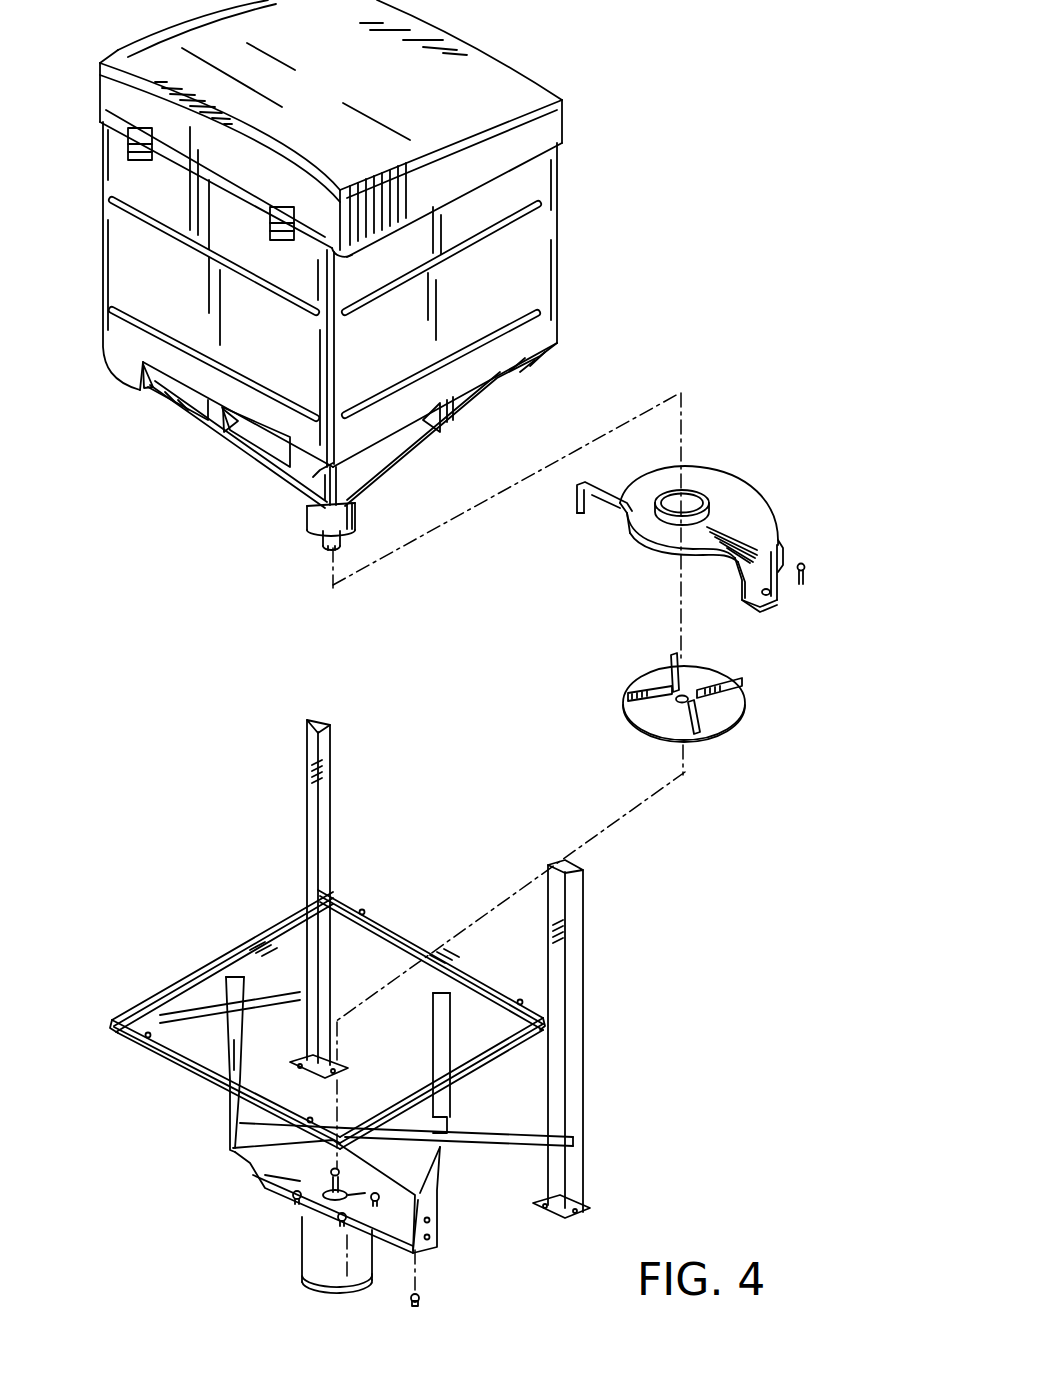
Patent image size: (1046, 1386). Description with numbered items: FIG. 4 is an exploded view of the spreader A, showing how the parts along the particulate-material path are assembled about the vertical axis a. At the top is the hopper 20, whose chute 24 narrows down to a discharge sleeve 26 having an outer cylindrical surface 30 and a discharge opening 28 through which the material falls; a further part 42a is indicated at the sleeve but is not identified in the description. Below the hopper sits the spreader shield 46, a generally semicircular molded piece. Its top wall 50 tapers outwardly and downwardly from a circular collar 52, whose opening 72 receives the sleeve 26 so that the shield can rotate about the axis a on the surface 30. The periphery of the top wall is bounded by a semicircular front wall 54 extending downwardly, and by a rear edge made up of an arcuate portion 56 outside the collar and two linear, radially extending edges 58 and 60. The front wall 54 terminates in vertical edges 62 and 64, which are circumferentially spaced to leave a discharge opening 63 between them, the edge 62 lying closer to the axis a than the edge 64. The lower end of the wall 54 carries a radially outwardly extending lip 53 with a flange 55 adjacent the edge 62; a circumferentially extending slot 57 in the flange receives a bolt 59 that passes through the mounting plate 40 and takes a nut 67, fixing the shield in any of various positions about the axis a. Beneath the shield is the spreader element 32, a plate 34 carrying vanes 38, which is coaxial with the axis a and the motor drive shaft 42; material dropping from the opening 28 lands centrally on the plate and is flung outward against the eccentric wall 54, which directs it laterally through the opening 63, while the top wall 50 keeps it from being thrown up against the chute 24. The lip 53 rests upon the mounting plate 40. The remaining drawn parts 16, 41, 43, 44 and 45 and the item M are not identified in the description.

The hopper 20 is at (566, 241).
The chute 24 is at (257, 463).
The discharge sleeve 26 is at (297, 523).
The discharge opening 28 is at (321, 536).
The outer cylindrical surface 30 is at (357, 512).
The drive shaft receptacle 42a is at (343, 538).
The spreader shield 46 is at (756, 460).
The top wall 50 is at (723, 482).
The circular collar 52 is at (658, 528).
The arcuate portion 56 is at (652, 551).
The linear radially extending edge 58 is at (727, 566).
The linear radially extending edge 60 is at (601, 503).
The vertical edge 62 is at (737, 598).
The discharge opening 63 is at (670, 567).
The vertical edge 64 is at (575, 497).
The opening 72 is at (688, 503).
The lip 53 is at (783, 563).
The semicircular front wall 54 is at (779, 551).
The flange 55 is at (758, 604).
The circumferentially extending slot 57 is at (771, 588).
The bolt 59 is at (806, 574).
The spreader element 32 is at (762, 704).
The plate 34 is at (653, 725).
The vanes 38 is at (666, 677).
The support frame 16 is at (601, 967).
The mounting plate 40 is at (253, 1162).
The right hanger bracket 41 is at (442, 1160).
The left hanger bracket 43 is at (230, 1105).
The motor drive shaft 42 is at (340, 1190).
The shaft nut 44 is at (345, 1192).
The mounting bolts 45 is at (340, 1220).
The nut 67 is at (425, 1298).
The motor M is at (322, 1262).
The spreader A is at (764, 46).
The axis a is at (680, 422).